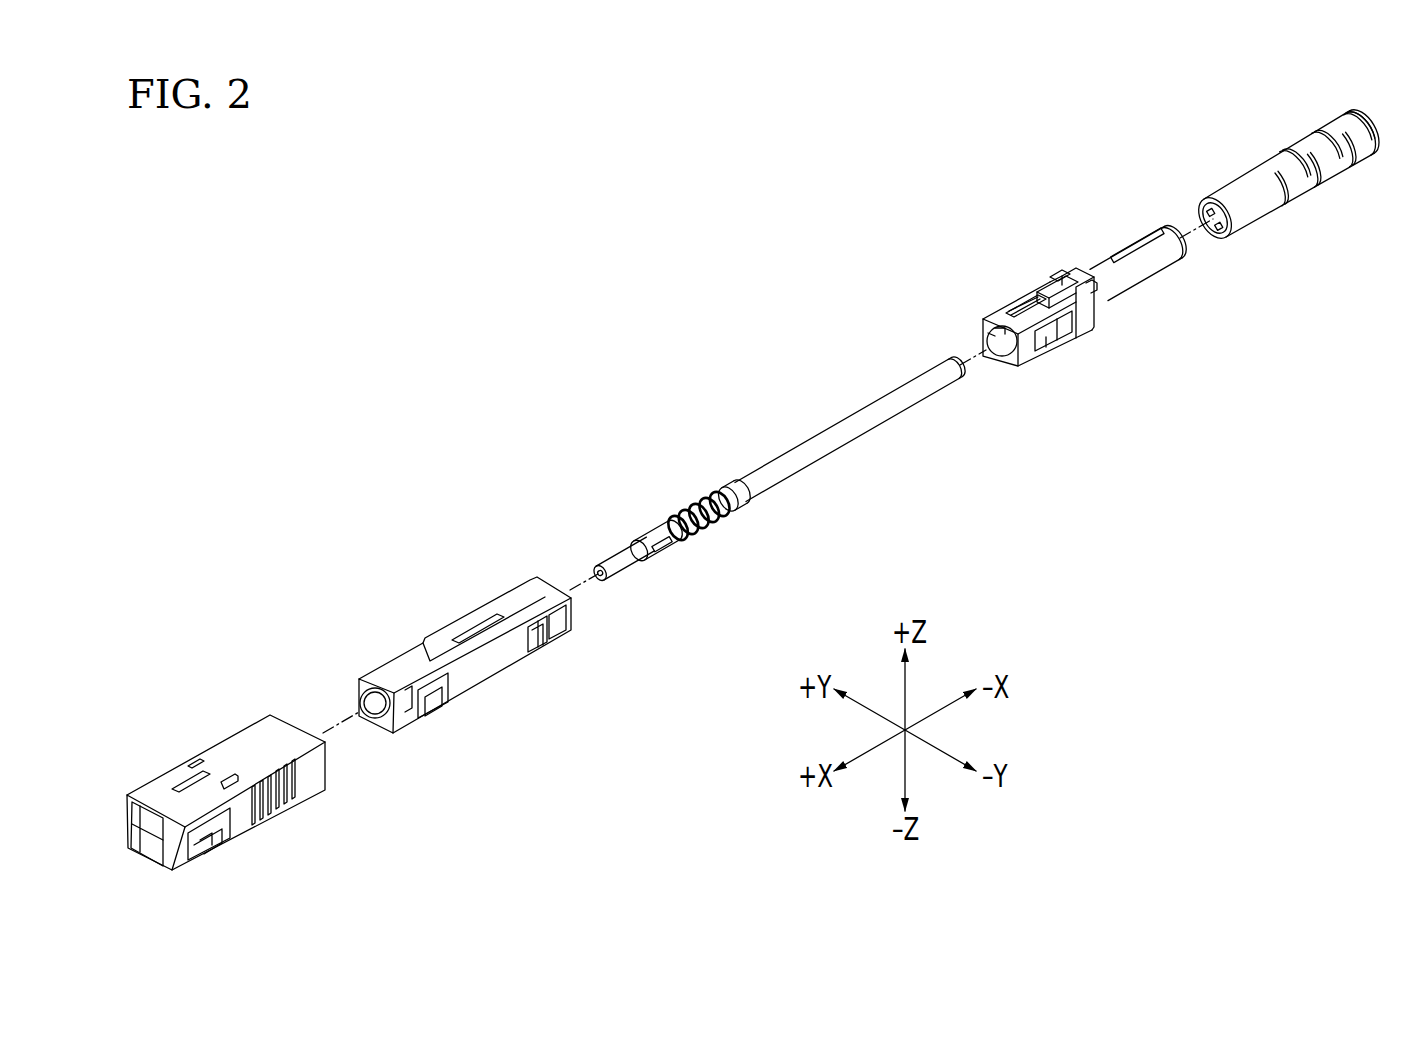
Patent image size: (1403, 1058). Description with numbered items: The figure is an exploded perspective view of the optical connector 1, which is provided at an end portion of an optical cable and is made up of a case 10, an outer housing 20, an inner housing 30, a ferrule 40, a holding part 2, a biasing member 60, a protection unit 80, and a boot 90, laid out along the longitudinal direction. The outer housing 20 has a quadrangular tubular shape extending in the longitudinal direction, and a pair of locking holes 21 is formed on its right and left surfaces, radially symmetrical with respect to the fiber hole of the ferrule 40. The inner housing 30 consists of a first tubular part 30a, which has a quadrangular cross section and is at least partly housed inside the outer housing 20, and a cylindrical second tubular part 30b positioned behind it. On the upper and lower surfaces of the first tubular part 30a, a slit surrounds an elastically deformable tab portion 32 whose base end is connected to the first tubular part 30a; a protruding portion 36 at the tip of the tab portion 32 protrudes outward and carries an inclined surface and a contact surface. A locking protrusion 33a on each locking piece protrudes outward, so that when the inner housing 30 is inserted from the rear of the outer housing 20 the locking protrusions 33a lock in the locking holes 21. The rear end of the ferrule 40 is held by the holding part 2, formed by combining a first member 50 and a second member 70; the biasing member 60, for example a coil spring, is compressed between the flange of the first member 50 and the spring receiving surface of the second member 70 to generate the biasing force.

The optical connector 1 is at (348, 403).
The holding part 2 is at (677, 428).
The case 10 is at (208, 735).
The outer housing 20 is at (465, 618).
The locking holes 21 is at (545, 645).
The inner housing 30 is at (1072, 313).
The first tubular part 30a is at (1072, 313).
The second tubular part 30b is at (1140, 295).
The tab portion 32 is at (1040, 298).
The locking protrusion 33a is at (1060, 335).
The protruding portion 36 is at (1020, 305).
The ferrule 40 is at (617, 540).
The first member 50 is at (641, 525).
The biasing member 60 is at (672, 505).
The second member 70 is at (723, 426).
The protection unit 80 is at (800, 430).
The boot 90 is at (1222, 177).